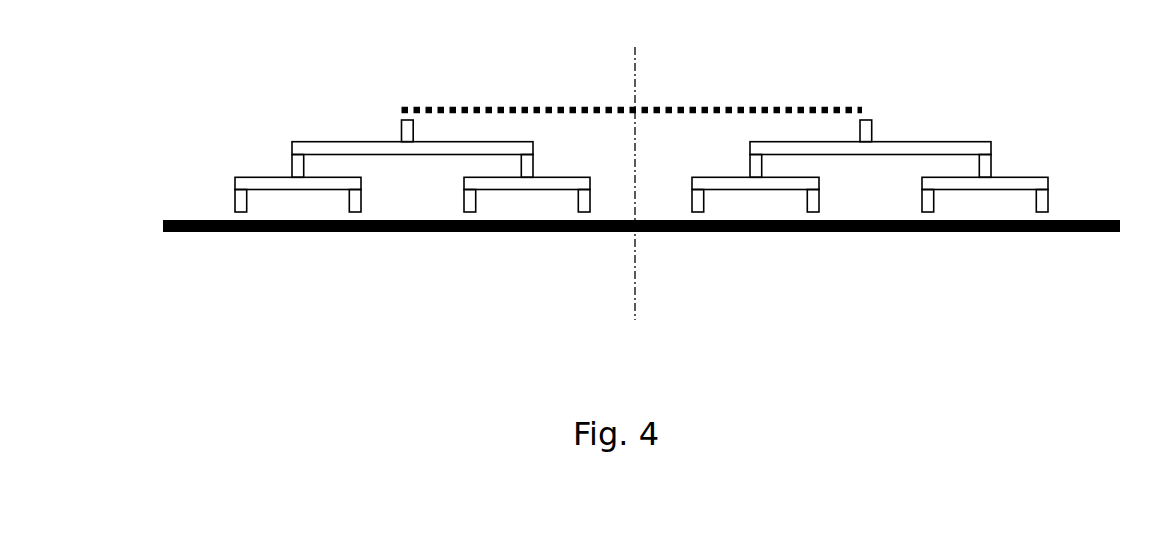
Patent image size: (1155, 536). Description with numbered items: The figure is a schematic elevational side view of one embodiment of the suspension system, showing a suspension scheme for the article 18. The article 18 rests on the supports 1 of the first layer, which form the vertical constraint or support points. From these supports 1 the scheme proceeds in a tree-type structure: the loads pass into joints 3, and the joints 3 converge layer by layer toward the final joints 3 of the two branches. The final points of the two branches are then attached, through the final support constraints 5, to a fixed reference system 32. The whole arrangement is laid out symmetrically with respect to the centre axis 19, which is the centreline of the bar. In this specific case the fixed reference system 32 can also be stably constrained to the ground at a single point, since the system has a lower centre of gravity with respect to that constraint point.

The support 1 is at (228, 207).
The joint 3 is at (290, 183).
The final support constraint 5 is at (421, 125).
The article 18 is at (172, 207).
The centre axis 19 is at (623, 292).
The fixed reference system 32 is at (607, 102).